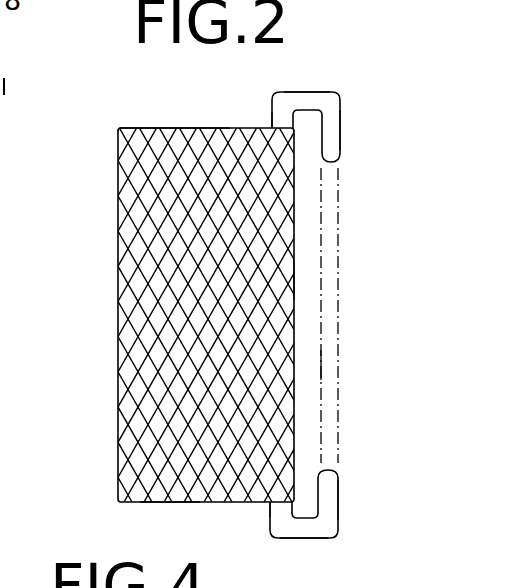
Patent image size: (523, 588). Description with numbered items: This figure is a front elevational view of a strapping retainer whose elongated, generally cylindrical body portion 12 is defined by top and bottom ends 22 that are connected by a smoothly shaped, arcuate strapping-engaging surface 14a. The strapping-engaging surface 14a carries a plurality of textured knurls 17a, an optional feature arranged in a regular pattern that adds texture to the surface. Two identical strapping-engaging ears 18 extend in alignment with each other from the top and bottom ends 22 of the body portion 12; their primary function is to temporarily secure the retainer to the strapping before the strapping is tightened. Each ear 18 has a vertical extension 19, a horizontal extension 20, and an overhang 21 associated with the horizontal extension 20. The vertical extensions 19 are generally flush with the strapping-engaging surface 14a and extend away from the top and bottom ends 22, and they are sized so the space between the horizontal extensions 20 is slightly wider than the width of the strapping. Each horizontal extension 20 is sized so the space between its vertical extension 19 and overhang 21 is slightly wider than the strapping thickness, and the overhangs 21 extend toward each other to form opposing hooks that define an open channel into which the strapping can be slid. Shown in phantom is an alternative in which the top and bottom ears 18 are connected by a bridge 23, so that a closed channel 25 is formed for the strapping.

The body portion 12 is at (100, 129).
The strapping-engaging surface 14a is at (295, 277).
The textured knurls 17a is at (145, 128).
The strapping-engaging ear 18 is at (348, 102).
The vertical extension 19 is at (272, 112).
The horizontal extension 20 is at (304, 92).
The overhang 21 is at (340, 137).
The top and bottom ends 22 is at (204, 128).
The bridge 23 is at (330, 203).
The closed channel 25 is at (306, 366).